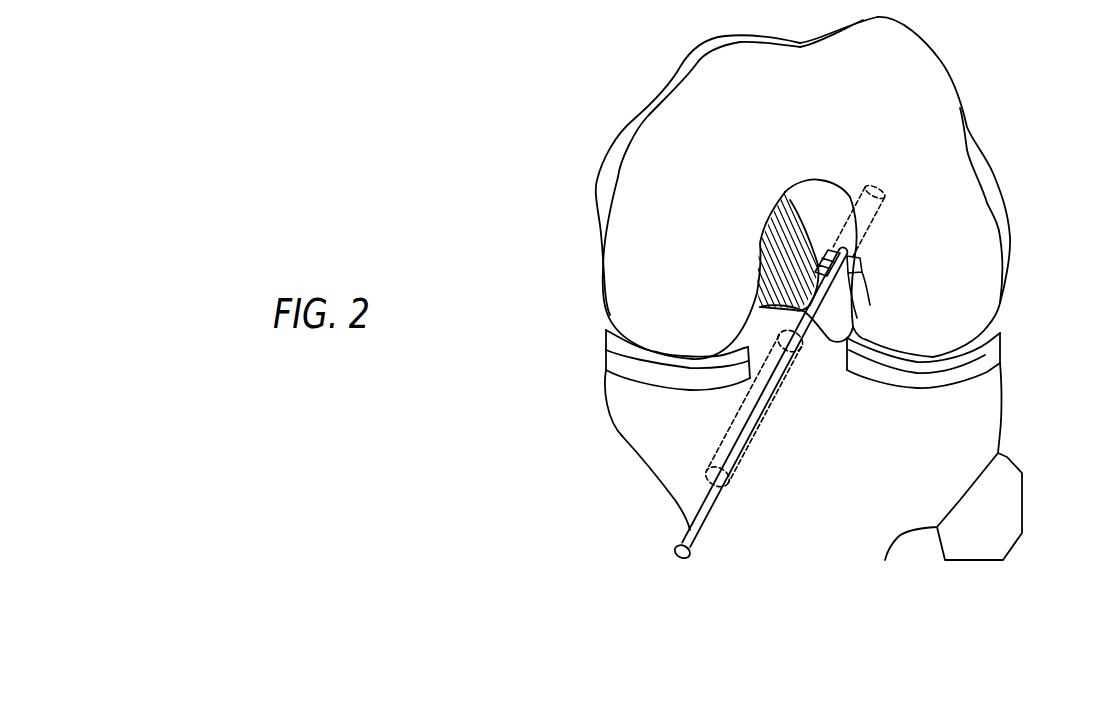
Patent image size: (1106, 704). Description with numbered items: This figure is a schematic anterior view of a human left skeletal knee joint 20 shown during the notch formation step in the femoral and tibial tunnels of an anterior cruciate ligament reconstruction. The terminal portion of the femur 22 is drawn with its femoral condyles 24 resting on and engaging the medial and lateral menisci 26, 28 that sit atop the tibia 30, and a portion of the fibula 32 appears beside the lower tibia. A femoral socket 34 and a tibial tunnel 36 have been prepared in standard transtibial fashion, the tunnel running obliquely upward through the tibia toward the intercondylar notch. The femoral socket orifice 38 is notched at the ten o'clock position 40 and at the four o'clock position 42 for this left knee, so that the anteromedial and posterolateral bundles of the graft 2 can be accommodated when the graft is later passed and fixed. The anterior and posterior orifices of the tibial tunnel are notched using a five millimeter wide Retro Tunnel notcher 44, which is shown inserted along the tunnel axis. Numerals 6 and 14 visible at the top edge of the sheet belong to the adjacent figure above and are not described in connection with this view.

The skeletal knee joint 20 is at (503, 171).
The femur 22 is at (598, 203).
The femoral condyles 24 is at (650, 275).
The medial meniscus 26 is at (607, 353).
The lateral meniscus 28 is at (993, 353).
The tibia 30 is at (988, 427).
The fibula 32 is at (1000, 521).
The femoral socket 34 is at (858, 230).
The tibial tunnel 36 is at (712, 461).
The femoral socket orifice 38 is at (855, 283).
The 10:00 position notch 40 is at (790, 192).
The 4:00 position notch 42 is at (860, 264).
The Retro Tunnel notcher 44 is at (807, 337).
The graft 2 is at (542, 0).
The numeral from adjacent figure 6 is at (688, 7).
The numeral from adjacent figure 14 is at (768, 6).